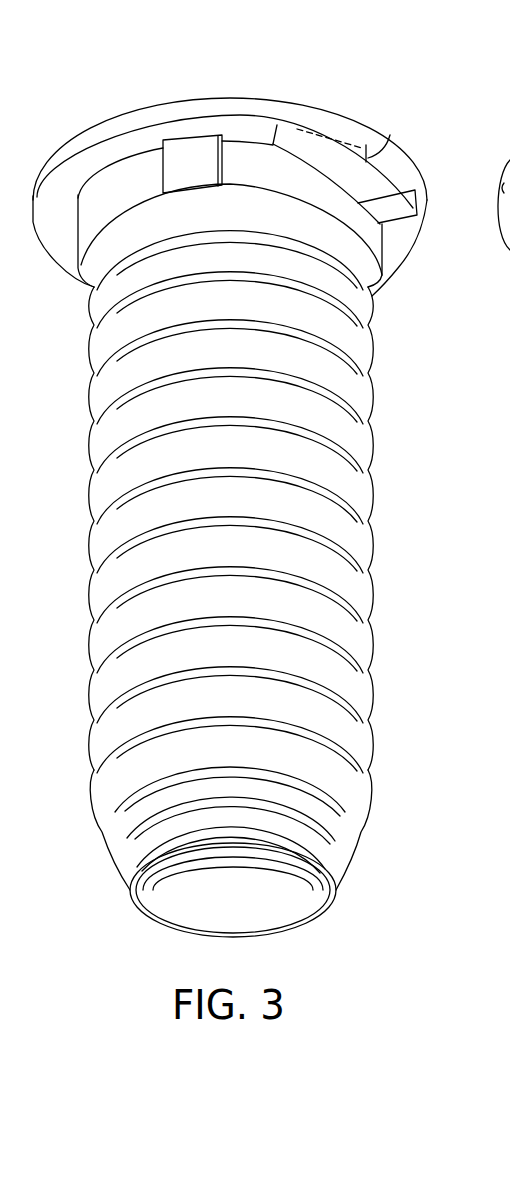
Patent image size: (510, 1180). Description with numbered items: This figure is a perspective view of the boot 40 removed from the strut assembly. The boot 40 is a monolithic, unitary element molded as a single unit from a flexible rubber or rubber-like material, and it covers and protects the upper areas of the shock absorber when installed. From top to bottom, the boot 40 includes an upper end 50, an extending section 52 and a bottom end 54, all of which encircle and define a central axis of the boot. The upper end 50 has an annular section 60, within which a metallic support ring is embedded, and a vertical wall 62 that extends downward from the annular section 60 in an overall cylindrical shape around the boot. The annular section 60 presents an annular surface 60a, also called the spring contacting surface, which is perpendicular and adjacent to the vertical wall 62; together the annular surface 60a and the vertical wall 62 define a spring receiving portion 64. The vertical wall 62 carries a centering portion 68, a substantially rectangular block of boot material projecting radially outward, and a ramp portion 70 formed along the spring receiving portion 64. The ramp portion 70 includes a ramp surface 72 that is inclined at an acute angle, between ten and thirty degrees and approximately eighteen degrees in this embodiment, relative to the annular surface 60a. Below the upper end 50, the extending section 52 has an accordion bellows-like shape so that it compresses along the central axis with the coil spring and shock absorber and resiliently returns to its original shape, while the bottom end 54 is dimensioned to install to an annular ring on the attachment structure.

The boot 40 is at (320, 64).
The upper end 50 is at (258, 110).
The extending section 52 is at (355, 482).
The bottom end 54 is at (345, 884).
The annular section 60 is at (97, 133).
The annular surface 60a is at (53, 223).
The vertical wall 62 is at (138, 180).
The spring receiving portion 64 is at (85, 192).
The centering portion 68 is at (187, 163).
The ramp portion 70 is at (370, 192).
The ramp surface 72 is at (332, 160).